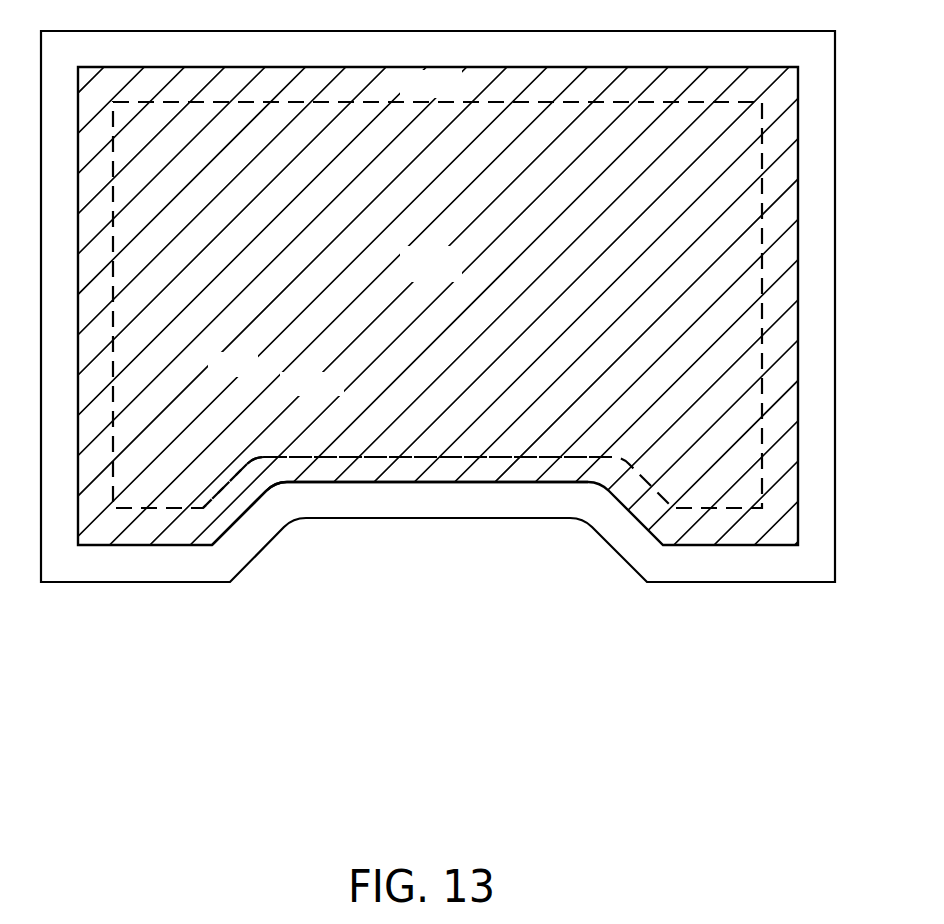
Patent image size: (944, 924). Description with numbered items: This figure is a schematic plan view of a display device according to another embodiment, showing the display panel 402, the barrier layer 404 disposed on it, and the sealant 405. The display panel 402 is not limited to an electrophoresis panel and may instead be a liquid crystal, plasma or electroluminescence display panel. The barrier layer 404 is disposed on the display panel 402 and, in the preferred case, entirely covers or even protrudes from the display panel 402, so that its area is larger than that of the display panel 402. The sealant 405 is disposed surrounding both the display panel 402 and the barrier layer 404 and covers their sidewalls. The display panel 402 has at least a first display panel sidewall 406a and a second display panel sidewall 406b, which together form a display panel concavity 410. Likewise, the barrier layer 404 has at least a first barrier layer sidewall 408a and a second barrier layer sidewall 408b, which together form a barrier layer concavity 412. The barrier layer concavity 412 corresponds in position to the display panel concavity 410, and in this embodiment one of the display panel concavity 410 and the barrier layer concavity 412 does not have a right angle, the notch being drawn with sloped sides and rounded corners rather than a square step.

The display panel 402 is at (456, 277).
The barrier layer 404 is at (456, 94).
The sealant 405 is at (456, 59).
The first display panel sidewall 406a is at (318, 455).
The second display panel sidewall 406b is at (207, 503).
The first barrier layer sidewall 408a is at (368, 483).
The second barrier layer sidewall 408b is at (227, 530).
The display panel concavity 410 is at (253, 453).
The barrier layer concavity 412 is at (275, 488).